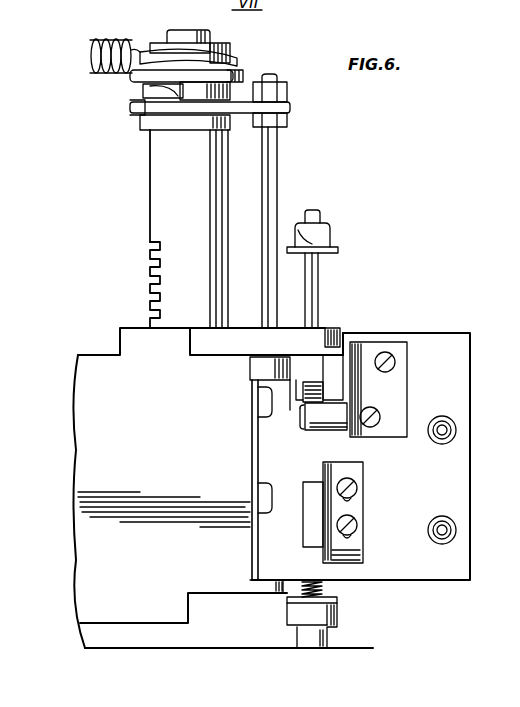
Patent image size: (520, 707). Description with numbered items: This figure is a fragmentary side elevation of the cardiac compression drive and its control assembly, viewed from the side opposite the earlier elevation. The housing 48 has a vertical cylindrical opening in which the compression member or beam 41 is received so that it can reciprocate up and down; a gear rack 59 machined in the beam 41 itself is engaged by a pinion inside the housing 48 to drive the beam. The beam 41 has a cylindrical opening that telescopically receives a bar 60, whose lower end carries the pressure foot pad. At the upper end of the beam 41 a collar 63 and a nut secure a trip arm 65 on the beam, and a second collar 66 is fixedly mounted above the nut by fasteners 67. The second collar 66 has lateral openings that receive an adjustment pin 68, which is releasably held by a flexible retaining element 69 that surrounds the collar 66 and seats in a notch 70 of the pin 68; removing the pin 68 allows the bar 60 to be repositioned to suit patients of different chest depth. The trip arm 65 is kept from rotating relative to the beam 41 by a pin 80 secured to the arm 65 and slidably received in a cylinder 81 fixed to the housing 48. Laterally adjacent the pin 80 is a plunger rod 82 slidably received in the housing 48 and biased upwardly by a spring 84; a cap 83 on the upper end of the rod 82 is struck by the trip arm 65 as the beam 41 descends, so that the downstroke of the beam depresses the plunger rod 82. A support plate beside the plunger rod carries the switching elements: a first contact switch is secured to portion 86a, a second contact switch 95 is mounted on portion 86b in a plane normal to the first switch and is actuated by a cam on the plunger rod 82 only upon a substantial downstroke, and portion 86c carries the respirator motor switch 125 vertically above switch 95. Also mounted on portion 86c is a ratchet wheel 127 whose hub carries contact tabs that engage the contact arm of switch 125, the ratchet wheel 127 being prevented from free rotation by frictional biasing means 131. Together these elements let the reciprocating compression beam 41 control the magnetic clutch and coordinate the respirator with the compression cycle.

The compression member 41 is at (189, 229).
The housing 48 is at (223, 488).
The gear rack 59 is at (152, 284).
The bar 60 is at (186, 34).
The collar 63 is at (173, 117).
The trip arm 65 is at (290, 107).
The second collar 66 is at (243, 74).
The fasteners 67 is at (142, 102).
The adjustment pin 68 is at (91, 48).
The flexible retaining element 69 is at (232, 65).
The notch 70 is at (140, 88).
The pin 80 is at (272, 160).
The cylinder 81 is at (258, 370).
The plunger rod 82 is at (312, 278).
The cap 83 is at (318, 232).
The spring 84 is at (325, 590).
The support plate portion 86a is at (458, 357).
The second portion of support plate 86b is at (345, 548).
The support plate portion 86c is at (353, 360).
The second contact switch 95 is at (318, 486).
The electrical contact switch 125 is at (340, 357).
The ratchet wheel 127 is at (320, 379).
The frictional biasing means 131 is at (333, 432).